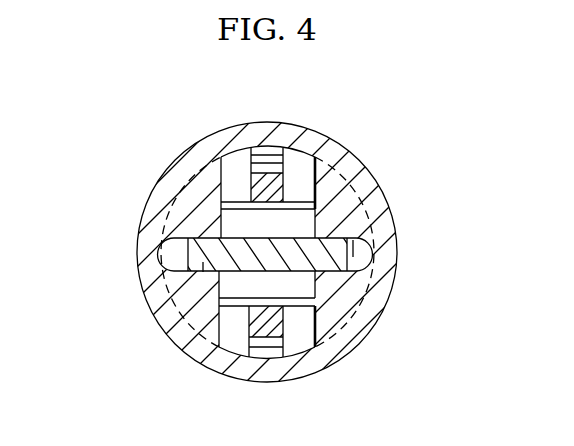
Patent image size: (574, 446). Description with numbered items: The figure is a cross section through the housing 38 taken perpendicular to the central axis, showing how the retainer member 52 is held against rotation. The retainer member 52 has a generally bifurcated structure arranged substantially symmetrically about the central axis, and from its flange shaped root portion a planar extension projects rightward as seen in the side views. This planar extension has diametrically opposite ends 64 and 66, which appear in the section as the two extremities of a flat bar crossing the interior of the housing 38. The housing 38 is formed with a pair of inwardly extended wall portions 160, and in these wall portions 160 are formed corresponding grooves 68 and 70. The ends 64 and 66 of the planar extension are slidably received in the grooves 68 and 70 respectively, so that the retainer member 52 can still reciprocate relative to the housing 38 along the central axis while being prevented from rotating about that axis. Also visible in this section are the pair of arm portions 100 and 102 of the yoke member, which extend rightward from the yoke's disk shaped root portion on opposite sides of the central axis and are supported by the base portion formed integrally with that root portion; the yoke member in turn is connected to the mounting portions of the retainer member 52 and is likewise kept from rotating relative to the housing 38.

The housing 38 is at (168, 178).
The inwardly extended wall portions 160 is at (198, 190).
The retainer member 52 is at (303, 230).
The arm portion 100 is at (251, 190).
The arm portion 102 is at (283, 323).
The end of planar extension 64 is at (338, 265).
The groove 70 is at (176, 253).
The end of planar extension 66 is at (203, 262).
The groove 68 is at (370, 232).